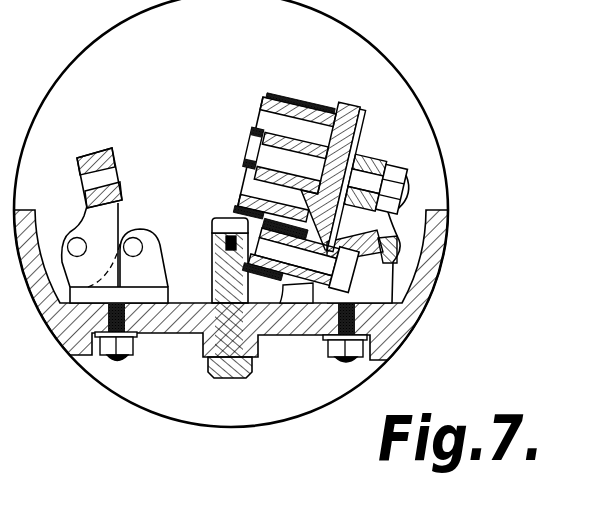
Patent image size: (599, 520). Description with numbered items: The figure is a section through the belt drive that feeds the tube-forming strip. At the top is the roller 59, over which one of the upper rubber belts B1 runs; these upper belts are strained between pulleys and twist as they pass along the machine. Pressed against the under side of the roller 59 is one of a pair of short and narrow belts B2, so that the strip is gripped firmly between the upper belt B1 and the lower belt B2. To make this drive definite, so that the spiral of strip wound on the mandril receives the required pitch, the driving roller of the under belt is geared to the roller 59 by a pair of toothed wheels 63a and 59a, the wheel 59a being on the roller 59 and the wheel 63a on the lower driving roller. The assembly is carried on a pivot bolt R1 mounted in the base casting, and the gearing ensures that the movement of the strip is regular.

The roller 59 is at (266, 96).
The toothed wheel 59a is at (357, 97).
The upper rubber belt B1 is at (309, 93).
The short narrow belt B2 is at (292, 223).
The pivot bolt R1 is at (228, 217).
The toothed wheel 63a is at (310, 294).